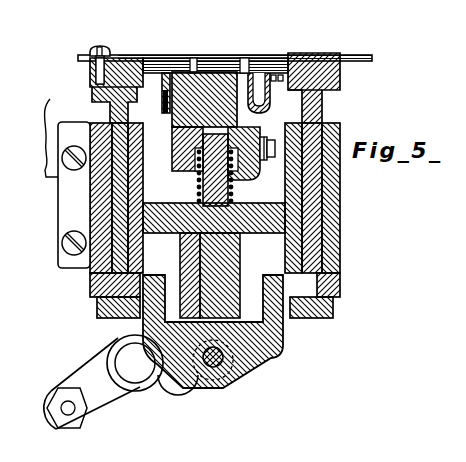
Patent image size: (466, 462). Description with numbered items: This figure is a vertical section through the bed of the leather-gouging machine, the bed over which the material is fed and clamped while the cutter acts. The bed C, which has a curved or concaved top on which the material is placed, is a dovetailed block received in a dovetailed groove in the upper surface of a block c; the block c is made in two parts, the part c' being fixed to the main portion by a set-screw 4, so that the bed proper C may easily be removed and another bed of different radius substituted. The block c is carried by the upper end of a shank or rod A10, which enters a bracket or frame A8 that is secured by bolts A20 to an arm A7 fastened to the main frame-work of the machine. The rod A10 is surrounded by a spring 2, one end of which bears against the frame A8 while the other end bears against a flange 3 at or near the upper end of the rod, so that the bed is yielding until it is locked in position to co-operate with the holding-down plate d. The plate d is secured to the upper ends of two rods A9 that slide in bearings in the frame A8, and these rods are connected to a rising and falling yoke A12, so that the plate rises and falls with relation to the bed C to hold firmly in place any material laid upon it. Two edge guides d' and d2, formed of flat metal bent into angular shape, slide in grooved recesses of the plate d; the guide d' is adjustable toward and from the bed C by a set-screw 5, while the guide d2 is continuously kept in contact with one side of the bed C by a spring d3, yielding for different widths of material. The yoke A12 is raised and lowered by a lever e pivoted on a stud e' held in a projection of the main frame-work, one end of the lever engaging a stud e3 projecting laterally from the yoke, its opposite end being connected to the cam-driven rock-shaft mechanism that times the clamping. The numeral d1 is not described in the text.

The set-screw 5 is at (97, 46).
The holding-down plate d is at (225, 70).
The edge guide d' is at (117, 53).
The plate block d1 is at (145, 57).
The edge guide d2 is at (272, 56).
The spring d3 is at (276, 84).
The part of grooved block c' is at (261, 100).
The bed C is at (197, 70).
The flange 3 is at (186, 135).
The block c is at (178, 139).
The set-screw 4 is at (264, 158).
The spring 2 is at (232, 187).
The shank or rod A10 is at (203, 190).
The rods A9 is at (343, 108).
The bracket or frame A8 is at (330, 220).
The arm A7 is at (55, 96).
The bolts A20 is at (68, 247).
The yoke A12 is at (272, 356).
The stud e3 is at (222, 385).
The lever e is at (121, 383).
The stud e' is at (127, 359).